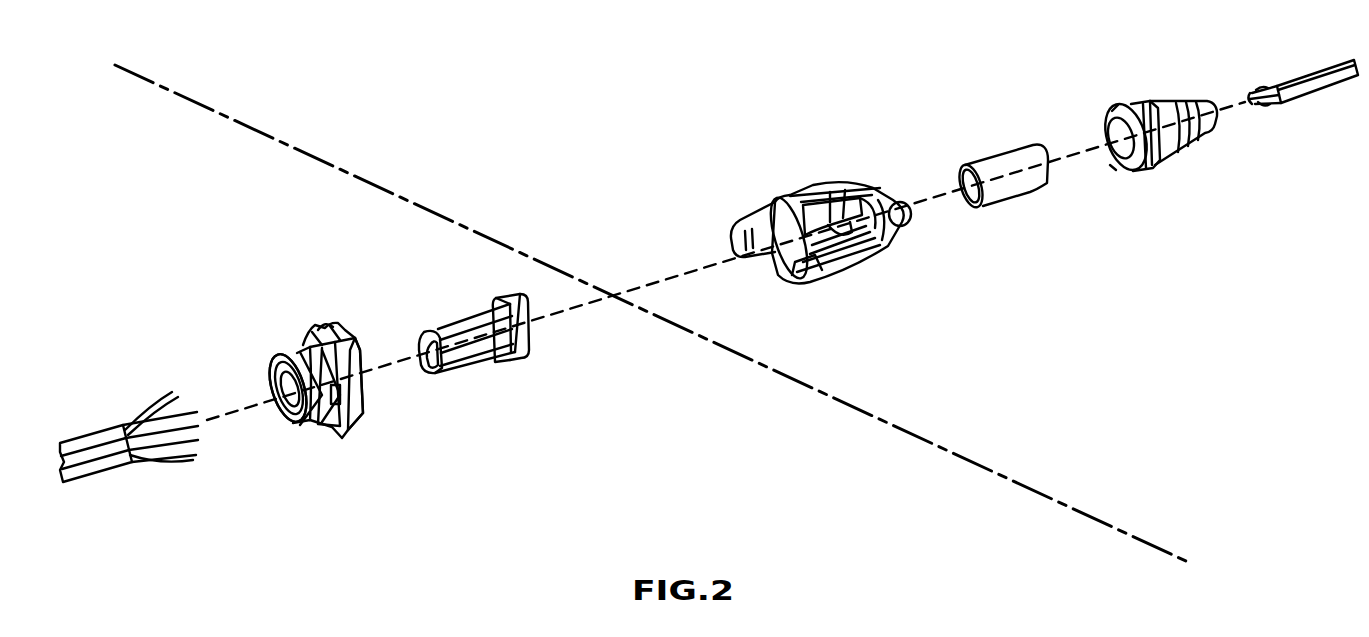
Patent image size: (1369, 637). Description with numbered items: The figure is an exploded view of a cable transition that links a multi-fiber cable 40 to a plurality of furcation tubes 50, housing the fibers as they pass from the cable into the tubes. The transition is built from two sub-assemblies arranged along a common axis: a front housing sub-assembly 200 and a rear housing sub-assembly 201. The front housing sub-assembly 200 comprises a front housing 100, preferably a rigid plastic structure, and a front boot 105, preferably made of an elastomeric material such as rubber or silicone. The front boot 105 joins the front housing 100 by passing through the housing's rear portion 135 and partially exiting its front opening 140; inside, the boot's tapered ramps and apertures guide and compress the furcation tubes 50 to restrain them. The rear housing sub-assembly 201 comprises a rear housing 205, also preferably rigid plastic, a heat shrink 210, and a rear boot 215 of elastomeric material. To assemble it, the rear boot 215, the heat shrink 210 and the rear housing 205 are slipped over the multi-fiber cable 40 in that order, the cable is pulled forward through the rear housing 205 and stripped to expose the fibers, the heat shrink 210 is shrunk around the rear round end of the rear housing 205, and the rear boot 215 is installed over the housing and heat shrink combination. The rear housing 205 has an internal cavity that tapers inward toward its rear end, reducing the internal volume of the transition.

The multi-fiber cable 40 is at (1300, 109).
The furcation tubes 50 is at (130, 390).
The front housing 100 is at (290, 314).
The front boot 105 is at (493, 376).
The rear portion 135 is at (388, 409).
The front opening 140 is at (269, 435).
The front housing sub-assembly 200 is at (937, 447).
The rear housing sub-assembly 201 is at (1025, 487).
The rear housing 205 is at (763, 171).
The heat shrink 210 is at (1030, 233).
The rear boot 215 is at (1113, 88).